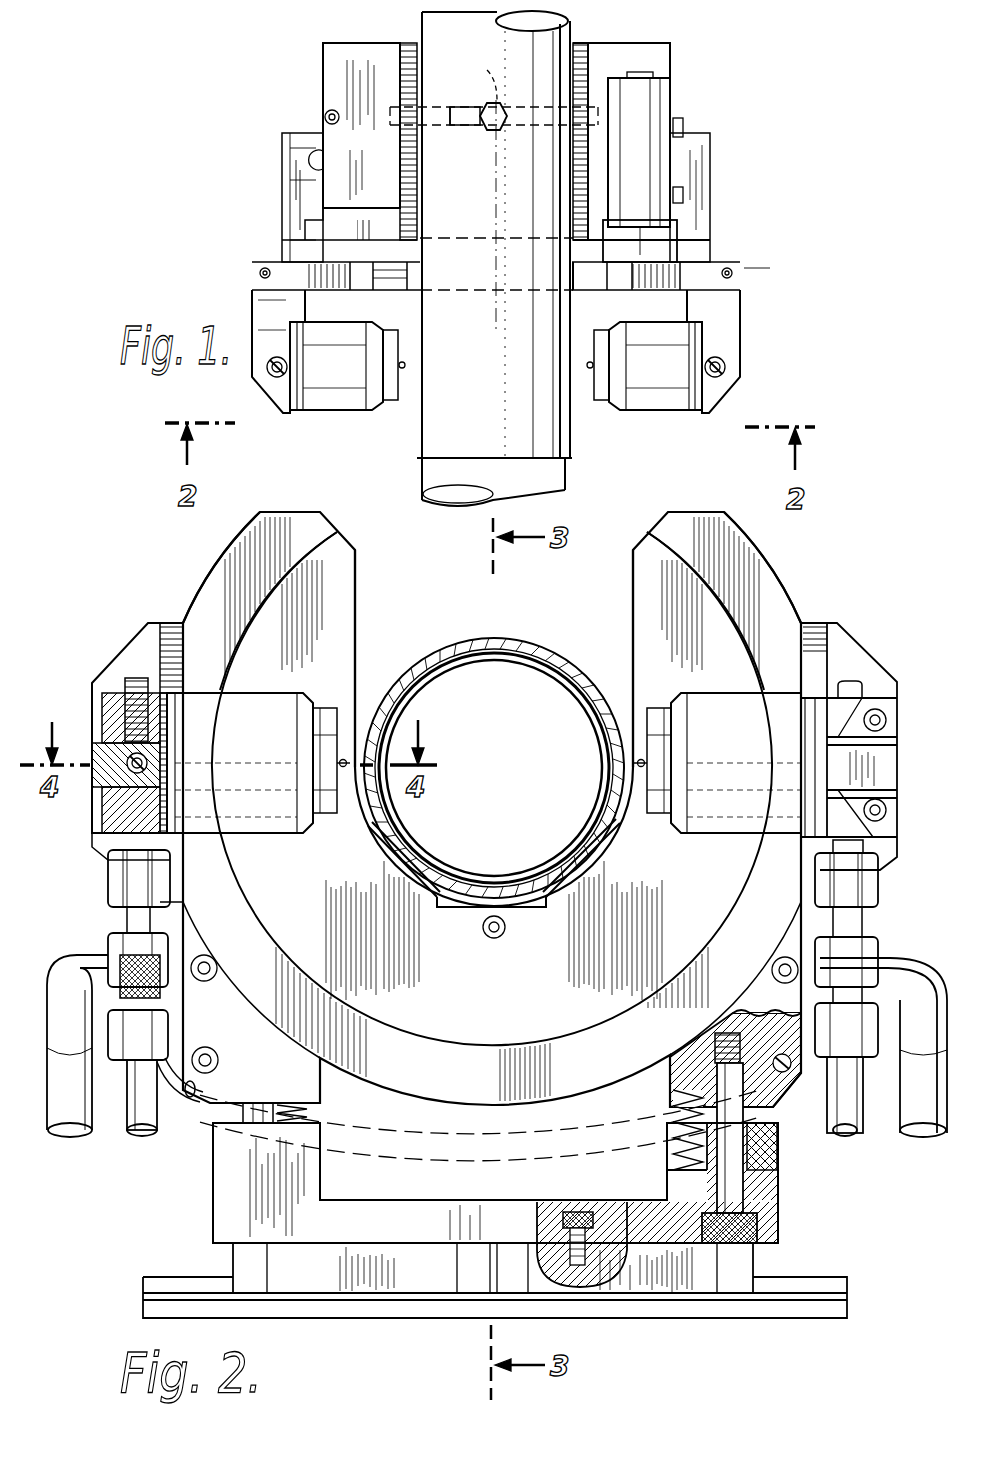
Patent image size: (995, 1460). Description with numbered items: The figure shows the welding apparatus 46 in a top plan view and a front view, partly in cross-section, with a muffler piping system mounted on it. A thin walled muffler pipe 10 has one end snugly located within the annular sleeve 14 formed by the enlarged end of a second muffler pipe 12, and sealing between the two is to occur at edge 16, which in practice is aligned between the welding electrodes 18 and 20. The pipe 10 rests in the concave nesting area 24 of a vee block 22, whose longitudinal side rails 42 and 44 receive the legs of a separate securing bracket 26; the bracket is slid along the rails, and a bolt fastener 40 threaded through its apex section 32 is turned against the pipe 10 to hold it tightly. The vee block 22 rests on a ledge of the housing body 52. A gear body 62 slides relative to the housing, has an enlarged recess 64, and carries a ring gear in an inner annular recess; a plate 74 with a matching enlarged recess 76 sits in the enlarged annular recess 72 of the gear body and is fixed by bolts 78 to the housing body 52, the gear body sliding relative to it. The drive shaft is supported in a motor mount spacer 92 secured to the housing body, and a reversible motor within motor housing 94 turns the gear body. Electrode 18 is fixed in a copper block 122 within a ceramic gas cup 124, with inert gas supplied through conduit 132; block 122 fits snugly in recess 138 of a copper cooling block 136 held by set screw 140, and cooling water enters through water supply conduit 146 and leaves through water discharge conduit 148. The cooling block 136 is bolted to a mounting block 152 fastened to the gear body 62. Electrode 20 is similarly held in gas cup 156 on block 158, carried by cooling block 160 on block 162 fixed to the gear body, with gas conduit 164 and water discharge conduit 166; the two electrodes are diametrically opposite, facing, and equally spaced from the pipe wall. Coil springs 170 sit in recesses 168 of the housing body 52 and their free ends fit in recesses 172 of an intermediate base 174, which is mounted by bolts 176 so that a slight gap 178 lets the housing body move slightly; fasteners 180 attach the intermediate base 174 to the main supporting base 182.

In FIG. 1, the muffler pipe 10 is at (571, 33).
In FIG. 2, the muffler pipe 10 is at (510, 636).
In FIG. 1, the muffler pipe 12 is at (566, 495).
In FIG. 1, the annular sleeve 14 is at (572, 458).
In FIG. 2, the annular sleeve 14 is at (468, 640).
In FIG. 1, the edge 16 is at (505, 190).
In FIG. 1, the welding electrode 18 is at (400, 400).
In FIG. 2, the welding electrode 18 is at (342, 758).
In FIG. 1, the welding electrode 20 is at (592, 400).
In FIG. 2, the welding electrode 20 is at (638, 764).
In FIG. 2, the vee block 22 is at (568, 882).
In FIG. 2, the concave nesting area 24 is at (455, 895).
In FIG. 1, the securing bracket 26 is at (370, 106).
In FIG. 1, the apex section 32 is at (476, 98).
In FIG. 1, the bolt fastener 40 is at (487, 70).
In FIG. 1, the side rail 42 is at (408, 48).
In FIG. 1, the side rail 44 is at (578, 47).
In FIG. 1, the welding apparatus 46 is at (318, 46).
In FIG. 2, the welding apparatus 46 is at (862, 630).
In FIG. 2, the housing body 52 is at (802, 1104).
In FIG. 2, the gear body 62 is at (772, 574).
In FIG. 1, the enlarged recess 64 is at (572, 254).
In FIG. 2, the enlarged annular recess 72 is at (298, 518).
In FIG. 2, the plate 74 is at (333, 592).
In FIG. 1, the enlarged recess 76 is at (575, 290).
In FIG. 2, the enlarged recess 76 is at (635, 578).
In FIG. 2, the bolts 78 is at (499, 936).
In FIG. 1, the motor mount spacer 92 is at (665, 245).
In FIG. 1, the motor housing 94 is at (655, 98).
In FIG. 2, the block 122 is at (105, 810).
In FIG. 1, the ceramic gas cup 124 is at (335, 412).
In FIG. 2, the ceramic gas cup 124 is at (255, 834).
In FIG. 2, the conduit 132 is at (146, 1152).
In FIG. 1, the cooling block 136 is at (254, 298).
In FIG. 2, the cooling block 136 is at (130, 692).
In FIG. 2, the recess 138 is at (98, 708).
In FIG. 2, the set screw 140 is at (130, 676).
In FIG. 2, the water supply conduit 146 is at (130, 1135).
In FIG. 2, the water discharge conduit 148 is at (58, 1132).
In FIG. 1, the mounting block 152 is at (315, 272).
In FIG. 2, the mounting block 152 is at (170, 625).
In FIG. 1, the gas cup 156 is at (660, 412).
In FIG. 2, the gas cup 156 is at (738, 842).
In FIG. 1, the block 158 is at (272, 377).
In FIG. 2, the block 158 is at (886, 776).
In FIG. 1, the cooling block 160 is at (740, 313).
In FIG. 2, the cooling block 160 is at (898, 721).
In FIG. 1, the block 162 is at (740, 268).
In FIG. 2, the block 162 is at (895, 646).
In FIG. 2, the conduit 164 is at (860, 1132).
In FIG. 2, the water discharge conduit 166 is at (903, 1132).
In FIG. 2, the recess 168 is at (642, 1128).
In FIG. 2, the coil spring 170 is at (284, 1100).
In FIG. 2, the recess 172 is at (670, 1148).
In FIG. 2, the intermediate base 174 is at (210, 1216).
In FIG. 2, the bolts 176 is at (220, 1070).
In FIG. 2, the gap 178 is at (768, 1152).
In FIG. 2, the fasteners 180 is at (570, 1206).
In FIG. 2, the main supporting base 182 is at (430, 1296).